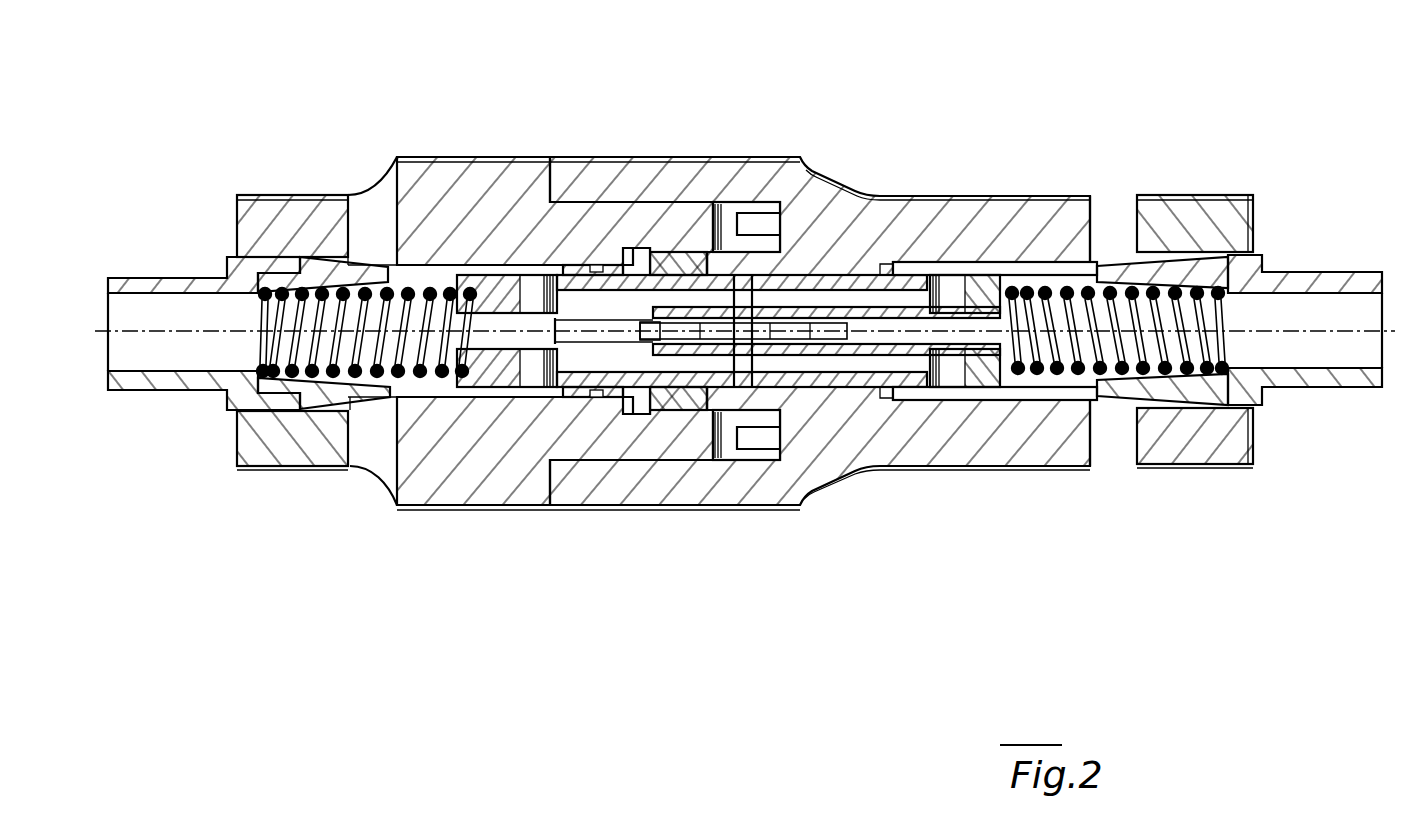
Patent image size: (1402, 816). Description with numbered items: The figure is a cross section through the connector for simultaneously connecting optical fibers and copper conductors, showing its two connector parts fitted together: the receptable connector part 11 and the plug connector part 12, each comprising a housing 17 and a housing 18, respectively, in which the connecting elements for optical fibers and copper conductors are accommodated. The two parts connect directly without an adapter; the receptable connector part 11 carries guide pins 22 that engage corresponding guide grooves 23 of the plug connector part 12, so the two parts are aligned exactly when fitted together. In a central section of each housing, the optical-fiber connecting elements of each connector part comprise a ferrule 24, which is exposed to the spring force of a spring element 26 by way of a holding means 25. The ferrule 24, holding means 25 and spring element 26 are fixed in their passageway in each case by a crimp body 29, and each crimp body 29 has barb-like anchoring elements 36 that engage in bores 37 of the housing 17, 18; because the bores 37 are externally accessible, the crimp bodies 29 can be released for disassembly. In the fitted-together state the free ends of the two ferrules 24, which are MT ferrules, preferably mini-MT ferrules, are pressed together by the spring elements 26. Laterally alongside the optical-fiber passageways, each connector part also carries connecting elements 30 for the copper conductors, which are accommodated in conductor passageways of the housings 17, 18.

The receptable connector part 11 is at (1025, 196).
The plug connector part 12 is at (290, 477).
The housing 17 is at (897, 225).
The housing 18 is at (490, 470).
The guide pins 22 is at (712, 395).
The guide grooves 23 is at (635, 395).
The ferrule 24 is at (648, 282).
The holding means 25 is at (508, 290).
The spring element 26 is at (430, 316).
The crimp body 29 is at (168, 291).
The connecting elements for copper conductors 30 is at (727, 212).
The barb-like anchoring elements 36 is at (363, 265).
The bores 37 is at (368, 222).